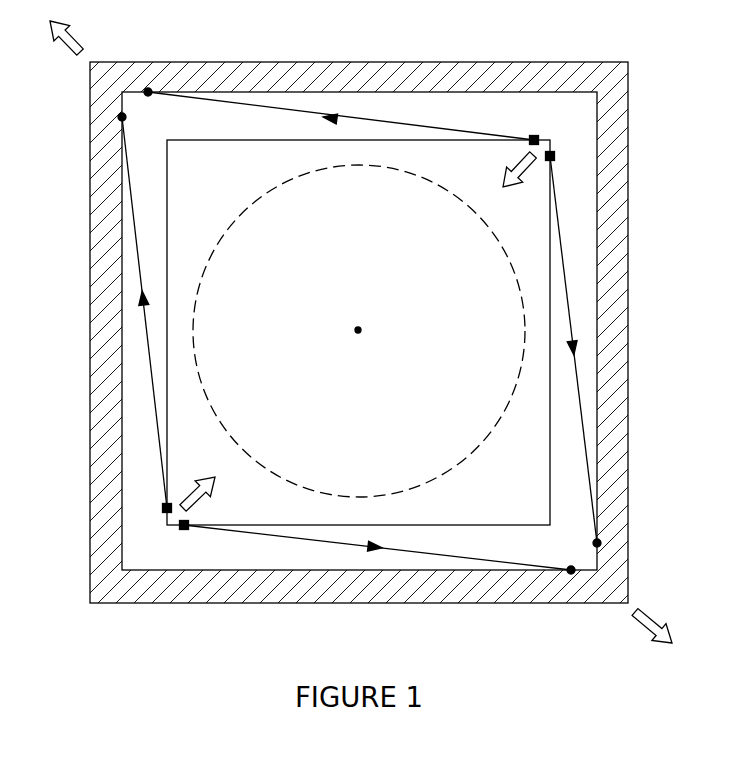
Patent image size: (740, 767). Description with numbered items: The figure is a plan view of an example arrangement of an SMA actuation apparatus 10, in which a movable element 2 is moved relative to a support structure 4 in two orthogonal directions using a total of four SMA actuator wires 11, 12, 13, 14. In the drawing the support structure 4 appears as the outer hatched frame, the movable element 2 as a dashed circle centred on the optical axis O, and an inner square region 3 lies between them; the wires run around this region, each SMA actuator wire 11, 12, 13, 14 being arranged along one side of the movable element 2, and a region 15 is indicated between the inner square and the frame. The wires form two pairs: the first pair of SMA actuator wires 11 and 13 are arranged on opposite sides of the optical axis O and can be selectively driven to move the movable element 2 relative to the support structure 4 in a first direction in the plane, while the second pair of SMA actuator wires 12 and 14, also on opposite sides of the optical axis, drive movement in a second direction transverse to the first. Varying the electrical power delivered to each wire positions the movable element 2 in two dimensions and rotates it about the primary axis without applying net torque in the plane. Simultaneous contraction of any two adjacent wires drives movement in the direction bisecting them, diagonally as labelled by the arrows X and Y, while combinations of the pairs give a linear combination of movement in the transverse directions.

The SMA actuation apparatus 10 is at (370, 333).
The support structure 4 is at (613, 200).
The optical block 3 is at (463, 160).
The movable element 2 is at (527, 305).
The cavity 15 is at (533, 260).
The SMA actuator wire 11 is at (400, 120).
The SMA actuator wire 12 is at (578, 392).
The SMA actuator wire 13 is at (417, 553).
The SMA actuator wire 14 is at (153, 388).